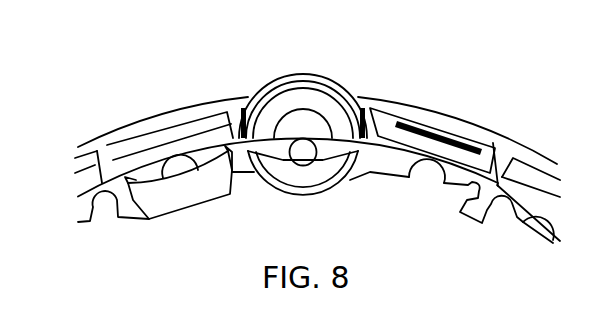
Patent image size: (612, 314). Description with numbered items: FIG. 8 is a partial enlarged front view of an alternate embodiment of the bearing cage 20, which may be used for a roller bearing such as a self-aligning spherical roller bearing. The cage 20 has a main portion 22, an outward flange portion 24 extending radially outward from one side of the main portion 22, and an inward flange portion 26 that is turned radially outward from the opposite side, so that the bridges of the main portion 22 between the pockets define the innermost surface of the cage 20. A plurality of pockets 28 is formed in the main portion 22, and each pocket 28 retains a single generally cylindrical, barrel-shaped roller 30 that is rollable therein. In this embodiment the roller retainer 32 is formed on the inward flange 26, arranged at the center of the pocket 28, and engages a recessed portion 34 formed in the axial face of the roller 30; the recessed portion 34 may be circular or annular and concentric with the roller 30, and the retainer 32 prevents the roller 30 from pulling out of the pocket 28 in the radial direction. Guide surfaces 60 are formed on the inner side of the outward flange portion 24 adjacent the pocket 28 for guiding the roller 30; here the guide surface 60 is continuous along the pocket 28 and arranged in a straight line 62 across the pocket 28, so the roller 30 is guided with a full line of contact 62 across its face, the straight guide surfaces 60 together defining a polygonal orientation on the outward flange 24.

The cage 20 is at (113, 127).
The main portion 22 is at (133, 228).
The outward flange portion 24 is at (168, 116).
The inward flange portion 26 is at (78, 178).
The pocket 28 is at (192, 212).
The roller 30 is at (278, 108).
The roller retainer 32 is at (306, 158).
The recessed portion 34 is at (303, 125).
The guide surface 60 is at (399, 113).
The line of contact 62 is at (448, 141).